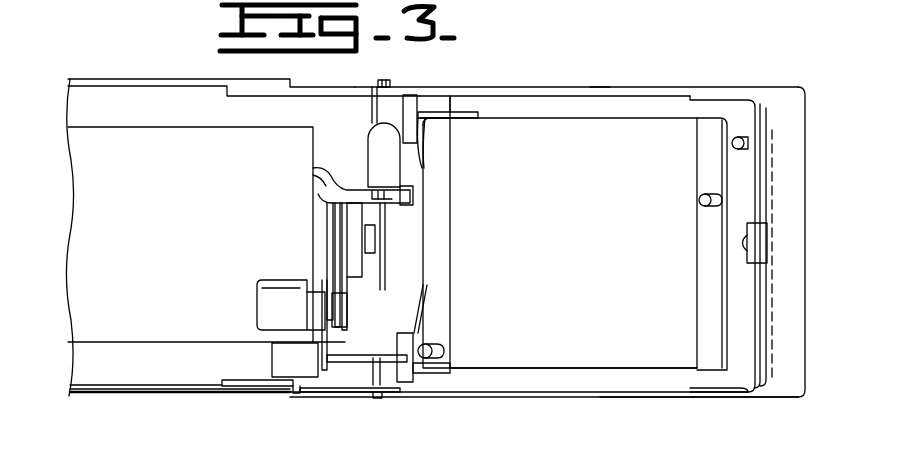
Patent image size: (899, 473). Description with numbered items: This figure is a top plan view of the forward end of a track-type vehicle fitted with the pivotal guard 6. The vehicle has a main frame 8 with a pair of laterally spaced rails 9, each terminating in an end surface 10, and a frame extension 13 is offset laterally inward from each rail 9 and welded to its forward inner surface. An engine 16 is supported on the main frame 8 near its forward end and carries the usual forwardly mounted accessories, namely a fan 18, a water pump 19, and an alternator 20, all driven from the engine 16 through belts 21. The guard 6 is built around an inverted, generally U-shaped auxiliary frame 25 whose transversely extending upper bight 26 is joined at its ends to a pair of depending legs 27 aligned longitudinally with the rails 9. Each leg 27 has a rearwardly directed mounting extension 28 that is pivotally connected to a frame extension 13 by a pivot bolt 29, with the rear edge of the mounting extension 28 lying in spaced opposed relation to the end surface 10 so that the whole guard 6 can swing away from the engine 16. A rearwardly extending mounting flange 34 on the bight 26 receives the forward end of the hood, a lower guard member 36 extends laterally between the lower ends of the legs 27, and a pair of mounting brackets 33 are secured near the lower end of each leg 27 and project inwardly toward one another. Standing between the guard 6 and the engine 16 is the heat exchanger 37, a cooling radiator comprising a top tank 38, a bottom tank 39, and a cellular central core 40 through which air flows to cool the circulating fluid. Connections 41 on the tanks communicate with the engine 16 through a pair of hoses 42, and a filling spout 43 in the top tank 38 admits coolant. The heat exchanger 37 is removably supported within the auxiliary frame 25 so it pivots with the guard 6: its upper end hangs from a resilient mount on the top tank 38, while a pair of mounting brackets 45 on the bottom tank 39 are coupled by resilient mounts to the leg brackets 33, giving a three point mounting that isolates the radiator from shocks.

The pivotal guard 6 is at (597, 80).
The main frame 8 is at (100, 410).
The rails 9 is at (150, 391).
The end surface 10 is at (291, 392).
The frame extension 13 is at (297, 390).
The engine 16 is at (153, 212).
The fan 18 is at (382, 148).
The water pump 19 is at (273, 305).
The alternator 20 is at (281, 362).
The belts 21 is at (340, 264).
The auxiliary frame 25 is at (658, 412).
The upper bight 26 is at (797, 239).
The depending legs 27 is at (485, 88).
The mounting extension 28 is at (340, 396).
The pivot bolt 29 is at (378, 399).
The mounting brackets 33 is at (410, 95).
The mounting flange 34 is at (745, 392).
The lower guard member 36 is at (373, 87).
The heat exchanger 37 is at (527, 117).
The top tank 38 is at (707, 128).
The bottom tank 39 is at (434, 238).
The central core 40 is at (605, 363).
The connections 41 is at (705, 194).
The hoses 42 is at (320, 172).
The filling spout 43 is at (743, 128).
The mounting brackets 45 is at (440, 110).